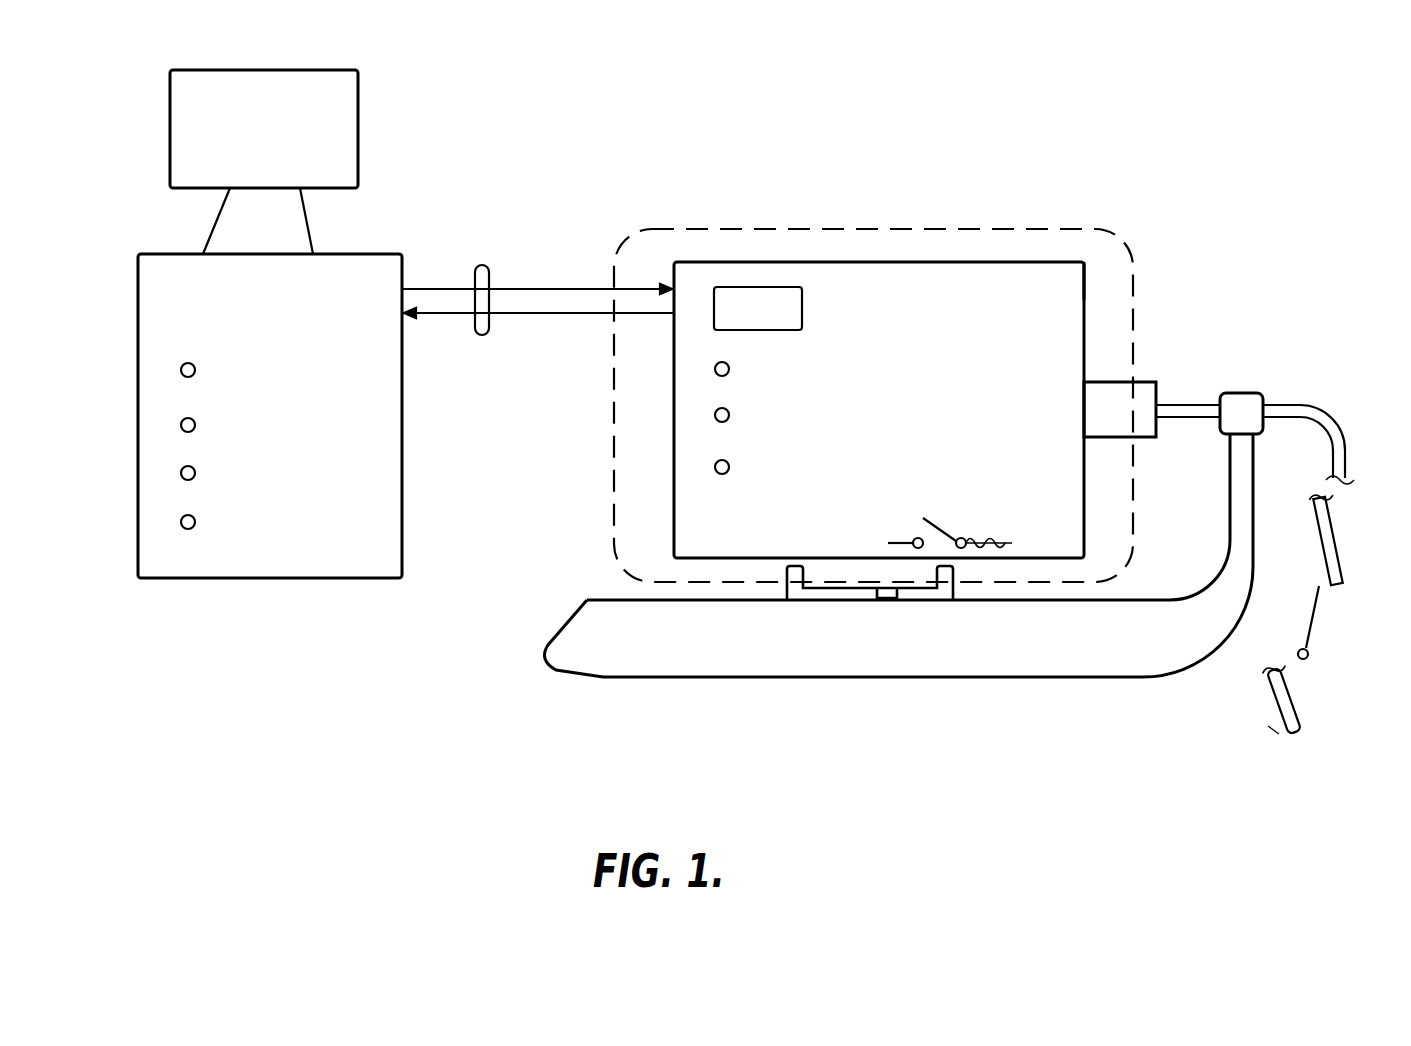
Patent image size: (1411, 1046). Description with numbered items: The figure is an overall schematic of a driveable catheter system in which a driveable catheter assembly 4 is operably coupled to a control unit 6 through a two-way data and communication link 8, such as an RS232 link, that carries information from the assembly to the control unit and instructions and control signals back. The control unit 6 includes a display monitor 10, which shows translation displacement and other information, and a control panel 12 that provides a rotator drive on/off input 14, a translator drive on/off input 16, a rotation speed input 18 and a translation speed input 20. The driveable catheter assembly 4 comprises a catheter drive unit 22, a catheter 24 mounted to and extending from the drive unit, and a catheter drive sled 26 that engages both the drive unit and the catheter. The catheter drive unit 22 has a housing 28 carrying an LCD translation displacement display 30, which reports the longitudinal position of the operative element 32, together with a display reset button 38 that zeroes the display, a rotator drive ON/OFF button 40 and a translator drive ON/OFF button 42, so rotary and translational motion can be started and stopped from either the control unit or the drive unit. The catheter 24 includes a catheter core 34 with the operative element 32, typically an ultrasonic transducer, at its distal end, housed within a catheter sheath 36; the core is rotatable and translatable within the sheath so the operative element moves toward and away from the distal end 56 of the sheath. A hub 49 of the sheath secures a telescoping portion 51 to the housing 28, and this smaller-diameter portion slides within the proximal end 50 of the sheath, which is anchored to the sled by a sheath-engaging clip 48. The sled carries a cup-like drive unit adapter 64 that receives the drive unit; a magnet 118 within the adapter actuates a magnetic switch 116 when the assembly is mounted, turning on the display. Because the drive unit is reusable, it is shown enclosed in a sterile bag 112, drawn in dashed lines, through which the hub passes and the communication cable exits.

The driveable catheter assembly 4 is at (1162, 121).
The control unit 6 is at (463, 130).
The two-way data and communication link 8 is at (487, 265).
The display monitor 10 is at (366, 61).
The control panel 12 is at (406, 244).
The rotator drive on/off input 14 is at (196, 369).
The translator drive on/off input 16 is at (196, 424).
The rotation speed input 18 is at (196, 472).
The translation speed input 20 is at (196, 521).
The catheter drive unit 22 is at (1011, 234).
The catheter 24 is at (1314, 372).
The catheter drive sled 26 is at (755, 728).
The housing 28 is at (1070, 278).
The LCD translation displacement display 30 is at (778, 287).
The operative element 32 is at (1310, 655).
The catheter core 34 is at (1314, 616).
The catheter sheath 36 is at (1325, 522).
The display reset button 38 is at (714, 369).
The rotator drive ON/OFF button 40 is at (714, 415).
The translator drive ON/OFF button 42 is at (714, 467).
The sheath-engaging clip 48 is at (1243, 393).
The hub 49 is at (1120, 400).
The proximal end of sheath 50 is at (1285, 420).
The telescoping portion 51 is at (1187, 403).
The distal end of sheath 56 is at (1285, 735).
The drive unit adapter 64 is at (787, 568).
The sterile bag 112 is at (612, 528).
The magnetic switch 116 is at (943, 533).
The magnet 118 is at (887, 600).